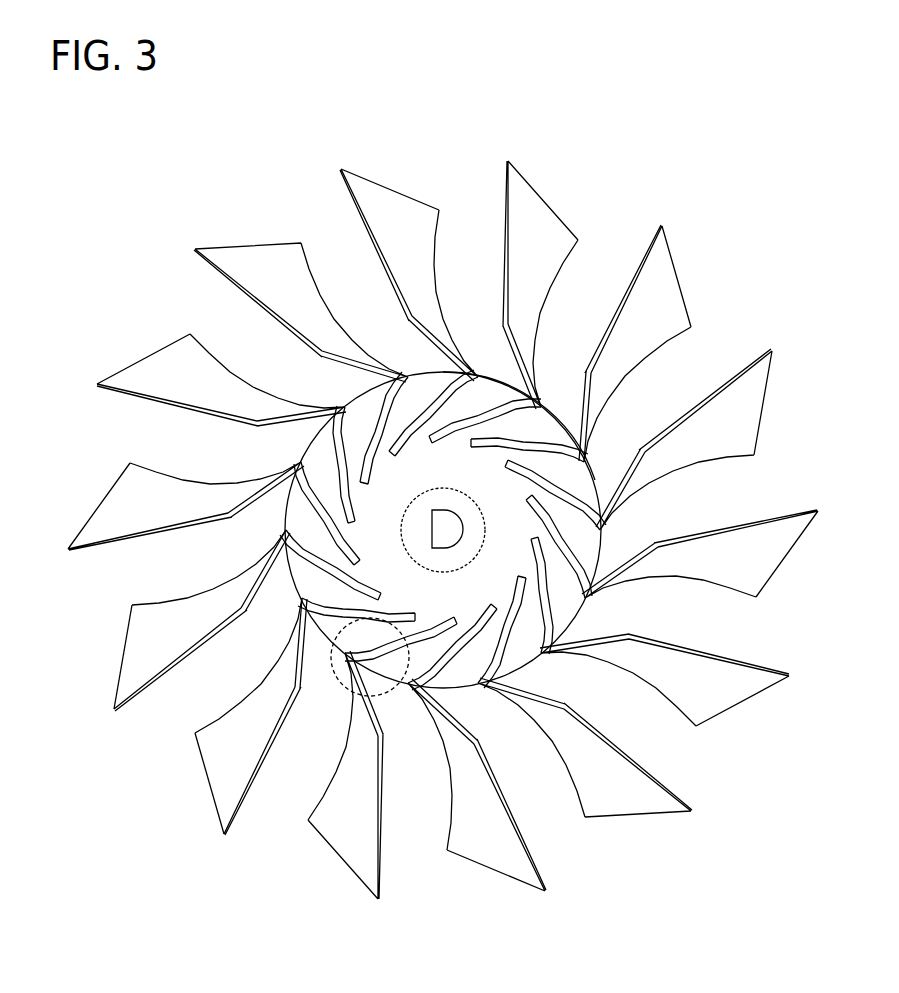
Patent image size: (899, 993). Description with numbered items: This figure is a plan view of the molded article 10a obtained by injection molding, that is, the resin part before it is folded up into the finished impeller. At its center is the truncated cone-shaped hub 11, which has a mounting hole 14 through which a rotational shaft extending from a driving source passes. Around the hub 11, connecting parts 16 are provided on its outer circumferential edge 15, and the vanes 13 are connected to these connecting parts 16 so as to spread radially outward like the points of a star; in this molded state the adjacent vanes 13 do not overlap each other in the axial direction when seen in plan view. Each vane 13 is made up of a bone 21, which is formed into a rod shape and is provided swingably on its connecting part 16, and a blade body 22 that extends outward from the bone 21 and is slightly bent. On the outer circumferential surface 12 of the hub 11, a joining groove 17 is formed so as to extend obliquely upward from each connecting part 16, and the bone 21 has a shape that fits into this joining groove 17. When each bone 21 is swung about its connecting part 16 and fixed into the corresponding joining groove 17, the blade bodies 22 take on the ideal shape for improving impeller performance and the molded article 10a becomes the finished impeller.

The molded article 10a is at (188, 173).
The hub 11 is at (430, 385).
The outer circumferential surface 12 is at (500, 393).
The vane 13 is at (416, 555).
The mounting hole 14 is at (457, 549).
The outer circumferential edge 15 is at (592, 468).
The connecting part 16 is at (330, 672).
The joining groove 17 is at (517, 615).
The bone 21 is at (295, 665).
The blade body 22 is at (230, 757).